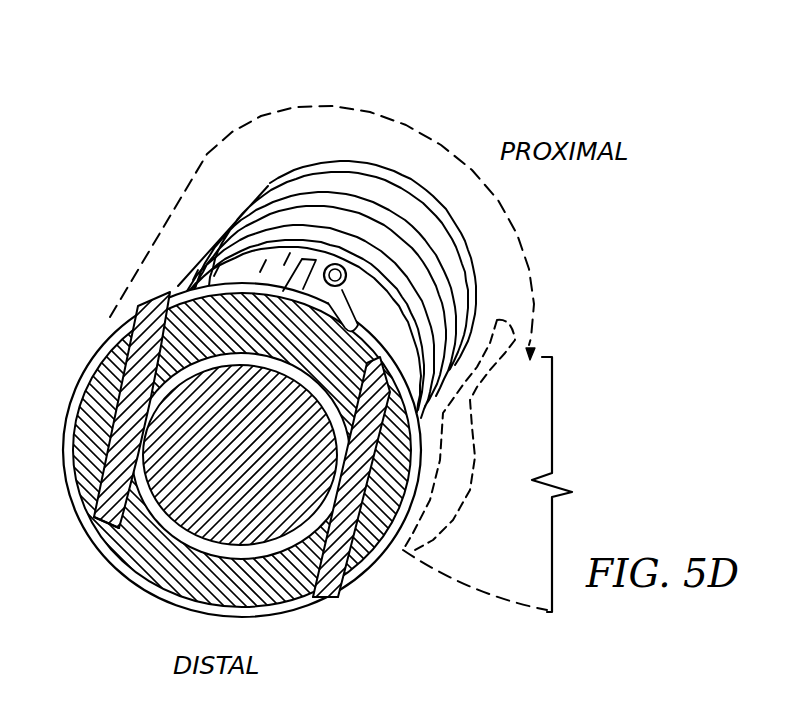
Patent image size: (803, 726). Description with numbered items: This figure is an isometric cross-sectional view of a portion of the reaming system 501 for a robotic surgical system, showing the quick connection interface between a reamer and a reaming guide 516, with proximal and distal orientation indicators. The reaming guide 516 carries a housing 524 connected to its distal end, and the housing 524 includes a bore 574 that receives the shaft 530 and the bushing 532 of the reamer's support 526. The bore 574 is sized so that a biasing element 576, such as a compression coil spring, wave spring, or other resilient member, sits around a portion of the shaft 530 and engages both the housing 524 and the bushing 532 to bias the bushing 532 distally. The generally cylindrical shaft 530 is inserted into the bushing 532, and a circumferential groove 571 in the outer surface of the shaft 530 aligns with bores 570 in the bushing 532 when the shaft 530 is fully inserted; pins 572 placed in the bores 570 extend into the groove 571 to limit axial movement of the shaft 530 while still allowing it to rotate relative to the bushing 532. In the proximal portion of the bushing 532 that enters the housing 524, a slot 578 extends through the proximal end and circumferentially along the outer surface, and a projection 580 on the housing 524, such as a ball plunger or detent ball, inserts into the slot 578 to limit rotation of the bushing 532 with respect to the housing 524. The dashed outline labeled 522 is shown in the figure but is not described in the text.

The reaming system 501 is at (187, 77).
The housing 524 is at (295, 133).
The bore 574 is at (213, 238).
The biasing element 576 is at (247, 213).
The slot 578 is at (305, 290).
The projection 580 is at (227, 267).
The pins 572 is at (123, 353).
The bores 570 is at (110, 527).
The groove 571 is at (223, 388).
The bushing 532 is at (83, 413).
The support 526 is at (187, 515).
The shaft 530 is at (247, 527).
The handle 522 is at (540, 338).
The reaming guide 516 is at (515, 627).